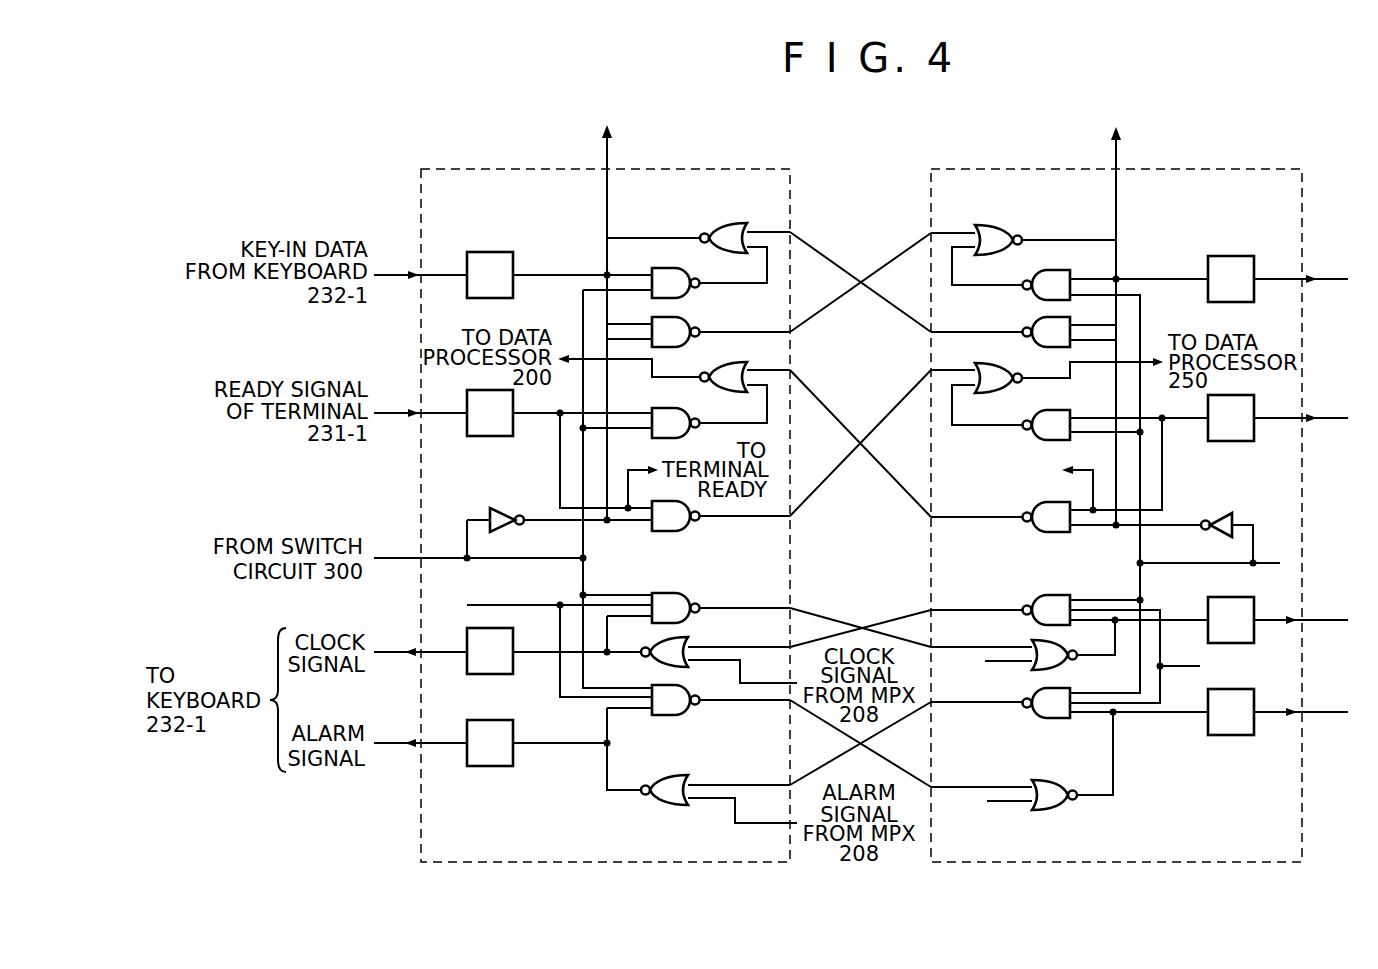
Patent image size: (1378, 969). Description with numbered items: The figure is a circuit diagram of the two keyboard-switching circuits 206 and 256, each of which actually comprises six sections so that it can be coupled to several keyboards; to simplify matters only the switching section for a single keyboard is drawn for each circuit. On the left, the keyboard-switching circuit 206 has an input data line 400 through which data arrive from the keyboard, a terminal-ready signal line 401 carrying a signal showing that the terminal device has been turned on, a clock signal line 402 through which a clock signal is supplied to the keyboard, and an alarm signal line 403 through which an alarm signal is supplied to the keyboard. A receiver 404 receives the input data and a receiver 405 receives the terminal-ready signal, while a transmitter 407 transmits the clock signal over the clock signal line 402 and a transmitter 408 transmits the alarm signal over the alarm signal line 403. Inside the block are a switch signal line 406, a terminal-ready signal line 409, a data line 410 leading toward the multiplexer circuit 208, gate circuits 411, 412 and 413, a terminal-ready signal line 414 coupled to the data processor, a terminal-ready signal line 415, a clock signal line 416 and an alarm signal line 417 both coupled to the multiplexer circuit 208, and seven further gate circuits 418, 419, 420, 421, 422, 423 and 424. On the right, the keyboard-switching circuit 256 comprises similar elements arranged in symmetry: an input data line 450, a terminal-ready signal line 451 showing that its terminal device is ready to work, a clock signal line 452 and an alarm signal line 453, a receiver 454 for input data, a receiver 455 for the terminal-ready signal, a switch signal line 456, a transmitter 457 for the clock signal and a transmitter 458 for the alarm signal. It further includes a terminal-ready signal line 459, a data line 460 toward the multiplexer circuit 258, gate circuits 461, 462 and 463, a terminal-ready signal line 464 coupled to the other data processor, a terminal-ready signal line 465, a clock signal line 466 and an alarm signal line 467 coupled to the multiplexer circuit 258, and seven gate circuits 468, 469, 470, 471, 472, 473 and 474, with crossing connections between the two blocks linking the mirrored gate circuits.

The keyboard-switching circuit 206 is at (508, 169).
The multiplexer circuit 208 is at (598, 302).
The keyboard-switching circuit 256 is at (1208, 170).
The multiplexer circuit 258 is at (1113, 307).
The input data line 400 is at (395, 277).
The terminal-ready signal line 401 is at (395, 415).
The clock signal line 402 is at (395, 654).
The alarm signal line 403 is at (395, 745).
The receiver 404 is at (492, 252).
The receiver 405 is at (492, 436).
The switch signal line 406 is at (447, 556).
The transmitter 407 is at (513, 673).
The transmitter 408 is at (492, 766).
The terminal-ready signal line 409 is at (505, 605).
The data line 410 is at (645, 237).
The gate circuit 411 is at (727, 223).
The gate circuit 412 is at (658, 267).
The gate circuit 413 is at (694, 326).
The terminal-ready signal line 414 is at (628, 361).
The terminal-ready signal line 415 is at (632, 467).
The clock signal line 416 is at (712, 662).
The alarm signal line 417 is at (703, 800).
The gate circuit 418 is at (669, 777).
The gate circuit 419 is at (688, 716).
The gate circuit 420 is at (684, 641).
The gate circuit 421 is at (694, 594).
The gate circuit 422 is at (735, 369).
The gate circuit 423 is at (690, 530).
The gate circuit 424 is at (697, 414).
The input data line 450 is at (1330, 281).
The terminal-ready signal line 451 is at (1330, 420).
The clock signal line 452 is at (1325, 622).
The alarm signal line 453 is at (1325, 714).
The receiver 454 is at (1232, 254).
The receiver 455 is at (1232, 441).
The switch signal line 456 is at (1270, 563).
The transmitter 457 is at (1254, 600).
The transmitter 458 is at (1232, 735).
The terminal-ready signal line 459 is at (1200, 666).
The data line 460 is at (1088, 240).
The gate circuit 461 is at (995, 225).
The gate circuit 462 is at (1068, 273).
The gate circuit 463 is at (1033, 326).
The terminal-ready signal line 464 is at (1092, 364).
The terminal-ready signal line 465 is at (1069, 470).
The clock signal line 466 is at (985, 662).
The alarm signal line 467 is at (1003, 802).
The gate circuit 468 is at (1057, 780).
The gate circuit 469 is at (1050, 717).
The gate circuit 470 is at (1040, 640).
The gate circuit 471 is at (1040, 595).
The gate circuit 472 is at (1042, 502).
The gate circuit 473 is at (987, 368).
The gate circuit 474 is at (1035, 418).